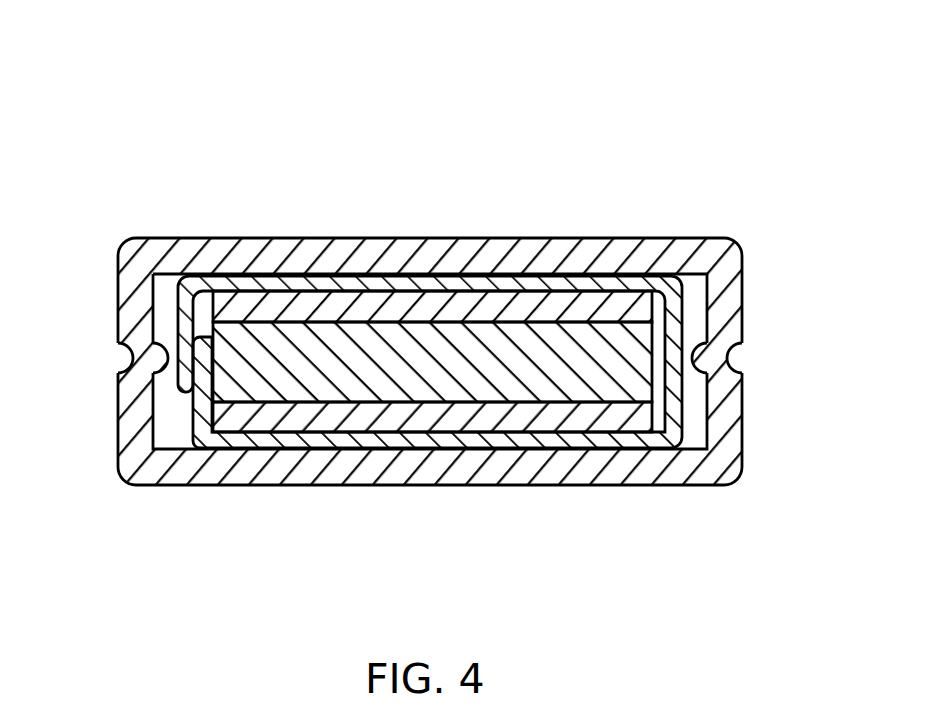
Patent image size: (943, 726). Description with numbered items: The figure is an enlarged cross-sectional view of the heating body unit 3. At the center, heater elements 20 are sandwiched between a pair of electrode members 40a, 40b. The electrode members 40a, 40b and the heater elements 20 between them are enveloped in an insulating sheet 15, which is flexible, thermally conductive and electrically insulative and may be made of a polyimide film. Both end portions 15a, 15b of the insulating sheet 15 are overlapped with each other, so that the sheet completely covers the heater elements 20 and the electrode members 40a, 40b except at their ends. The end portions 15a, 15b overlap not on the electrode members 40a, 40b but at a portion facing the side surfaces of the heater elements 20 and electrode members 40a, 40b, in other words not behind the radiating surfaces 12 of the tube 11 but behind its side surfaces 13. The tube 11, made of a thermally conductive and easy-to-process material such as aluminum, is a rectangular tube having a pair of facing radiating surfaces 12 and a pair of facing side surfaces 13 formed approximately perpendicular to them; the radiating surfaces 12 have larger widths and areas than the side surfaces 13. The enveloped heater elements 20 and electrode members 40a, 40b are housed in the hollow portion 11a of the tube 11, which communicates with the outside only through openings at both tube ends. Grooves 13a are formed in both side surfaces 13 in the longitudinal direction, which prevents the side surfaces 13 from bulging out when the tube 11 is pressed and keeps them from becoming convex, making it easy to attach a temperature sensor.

The heating body unit 3 is at (656, 146).
The tube 11 is at (527, 250).
The hollow portion 11a is at (693, 431).
The radiating surfaces 12 is at (383, 245).
The side surfaces 13 is at (118, 283).
The grooves 13a is at (121, 347).
The insulating sheet 15 is at (615, 437).
The end portion of insulating sheet 15a is at (187, 312).
The end portion of insulating sheet 15b is at (207, 405).
The heater elements 20 is at (420, 372).
The electrode member 40a is at (288, 308).
The electrode member 40b is at (520, 418).